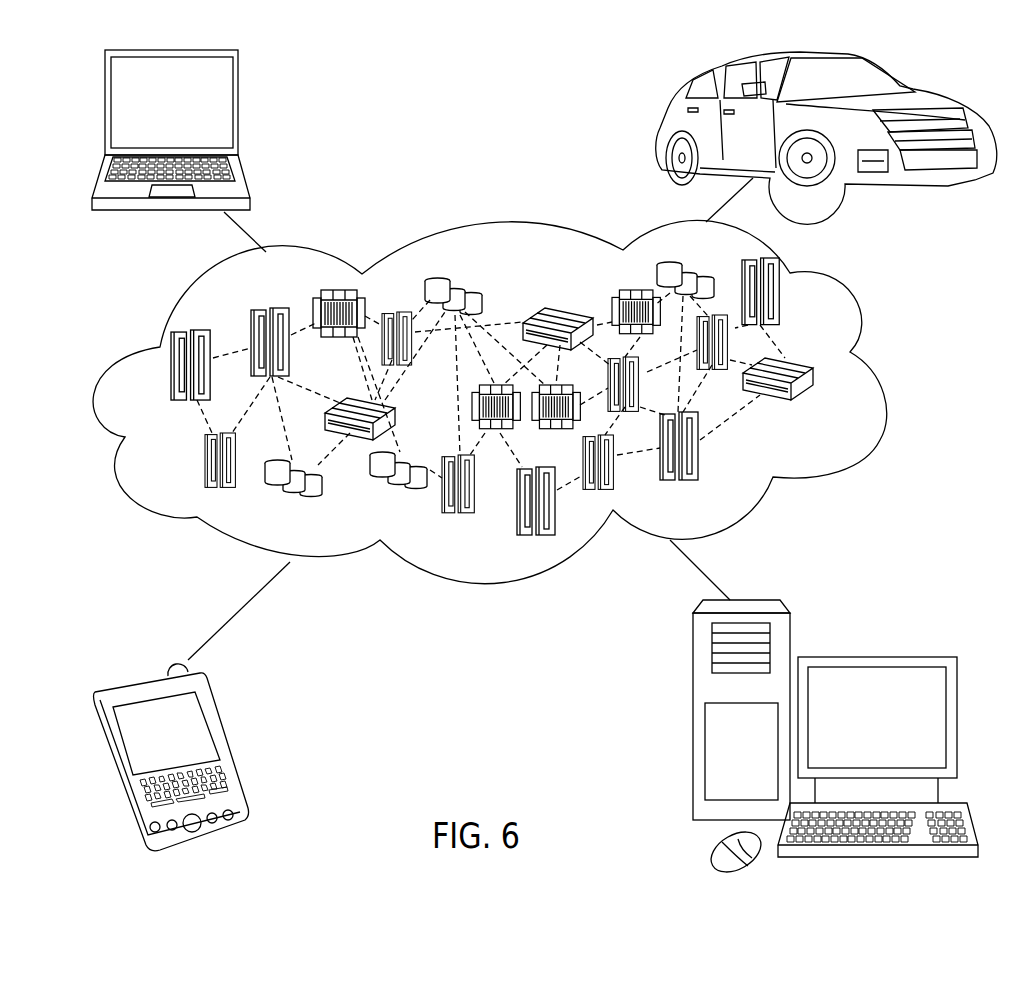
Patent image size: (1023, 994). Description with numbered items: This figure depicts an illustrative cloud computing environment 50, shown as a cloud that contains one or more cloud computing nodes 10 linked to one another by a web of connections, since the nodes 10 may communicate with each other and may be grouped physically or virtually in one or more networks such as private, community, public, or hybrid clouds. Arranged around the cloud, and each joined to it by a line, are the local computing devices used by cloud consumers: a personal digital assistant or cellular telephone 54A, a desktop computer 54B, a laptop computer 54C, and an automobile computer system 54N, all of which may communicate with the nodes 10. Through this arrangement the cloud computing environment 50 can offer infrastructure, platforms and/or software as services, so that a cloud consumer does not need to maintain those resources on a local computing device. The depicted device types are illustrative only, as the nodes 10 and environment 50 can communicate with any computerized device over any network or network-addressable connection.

The cloud computing node 10 is at (833, 410).
The cloud computing environment 50 is at (513, 440).
The personal digital assistant or cellular telephone 54A is at (227, 743).
The desktop computer 54B is at (873, 657).
The laptop computer 54C is at (238, 110).
The automobile computer system 54N is at (662, 124).